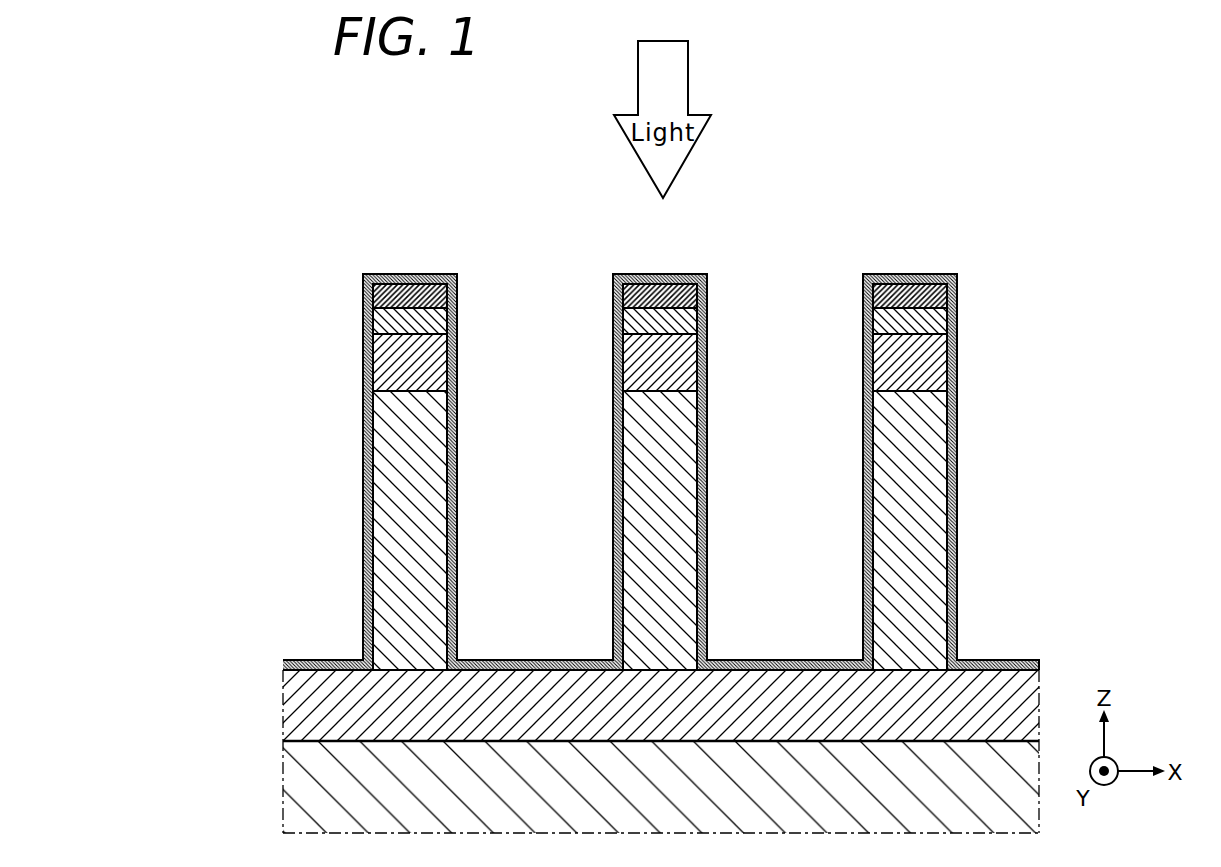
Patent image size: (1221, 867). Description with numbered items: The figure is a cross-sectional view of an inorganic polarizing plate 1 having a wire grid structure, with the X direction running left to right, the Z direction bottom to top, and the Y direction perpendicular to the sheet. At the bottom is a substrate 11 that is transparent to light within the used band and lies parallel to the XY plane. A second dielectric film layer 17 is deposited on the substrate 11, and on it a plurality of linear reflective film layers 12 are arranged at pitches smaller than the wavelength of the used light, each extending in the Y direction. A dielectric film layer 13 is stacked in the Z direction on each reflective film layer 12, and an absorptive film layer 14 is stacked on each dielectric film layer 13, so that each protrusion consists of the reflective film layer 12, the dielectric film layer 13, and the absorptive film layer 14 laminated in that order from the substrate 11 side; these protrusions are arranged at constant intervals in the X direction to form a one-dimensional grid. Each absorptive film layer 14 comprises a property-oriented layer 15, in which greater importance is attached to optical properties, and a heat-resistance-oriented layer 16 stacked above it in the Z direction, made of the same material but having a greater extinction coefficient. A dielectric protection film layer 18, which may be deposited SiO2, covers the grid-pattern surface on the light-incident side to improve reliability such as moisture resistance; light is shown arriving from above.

The inorganic polarizing plate 1 is at (841, 163).
The substrate 11 is at (295, 789).
The reflective film layer 12 is at (387, 541).
The dielectric film layer 13 is at (385, 368).
The absorptive film layer 14 is at (293, 273).
The property-oriented layer 15 is at (387, 326).
The heat-resistance-oriented layer 16 is at (383, 296).
The second dielectric film layer 17 is at (295, 696).
The dielectric protection film layer 18 is at (1002, 660).